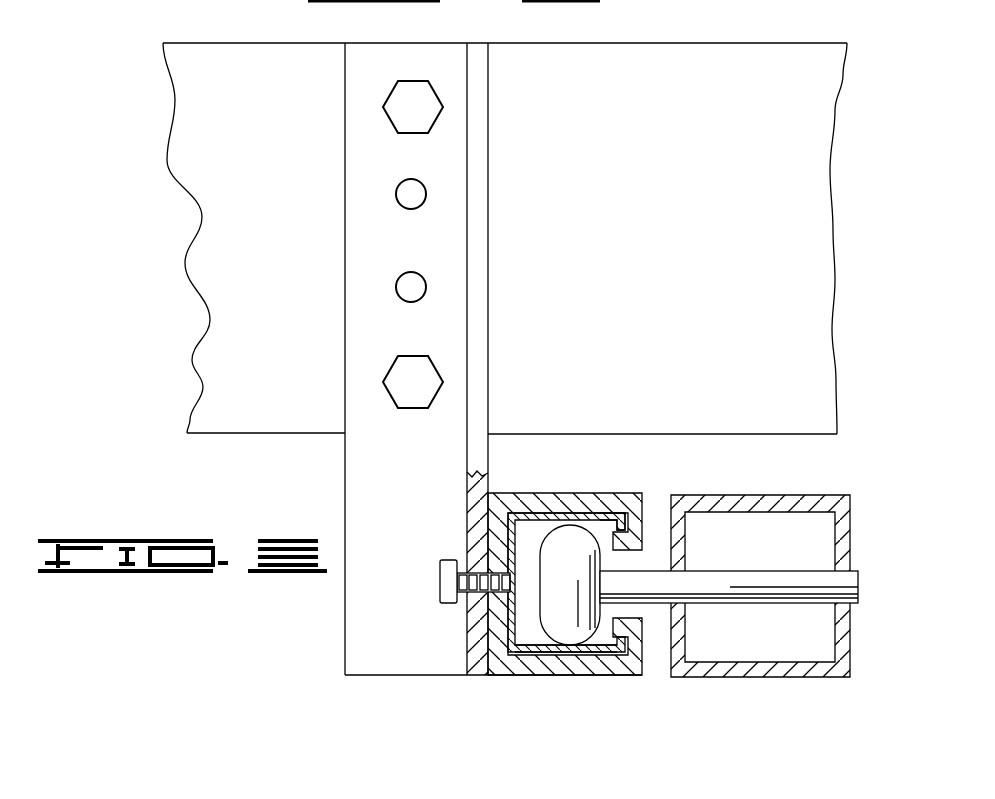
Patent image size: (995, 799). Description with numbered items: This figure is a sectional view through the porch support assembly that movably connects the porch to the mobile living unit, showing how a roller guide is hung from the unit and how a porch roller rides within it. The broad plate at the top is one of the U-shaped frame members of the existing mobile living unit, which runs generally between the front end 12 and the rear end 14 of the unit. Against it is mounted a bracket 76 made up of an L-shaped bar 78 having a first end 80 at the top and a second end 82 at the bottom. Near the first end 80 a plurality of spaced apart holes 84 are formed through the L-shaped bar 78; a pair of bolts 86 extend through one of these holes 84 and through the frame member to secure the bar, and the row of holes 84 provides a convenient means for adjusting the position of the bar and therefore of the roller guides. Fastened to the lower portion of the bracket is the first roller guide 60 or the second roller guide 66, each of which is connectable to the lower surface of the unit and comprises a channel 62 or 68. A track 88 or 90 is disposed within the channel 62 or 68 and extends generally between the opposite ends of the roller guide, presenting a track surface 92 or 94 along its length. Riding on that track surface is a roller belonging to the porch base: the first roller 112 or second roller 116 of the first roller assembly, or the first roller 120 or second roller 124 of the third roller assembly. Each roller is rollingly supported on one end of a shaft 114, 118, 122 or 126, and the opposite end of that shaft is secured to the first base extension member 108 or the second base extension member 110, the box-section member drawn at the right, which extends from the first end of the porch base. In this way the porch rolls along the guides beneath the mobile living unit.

The front end 12 is at (667, 217).
The rear end 14 is at (678, 66).
The bracket 76 is at (448, 354).
The L-shaped bar 78 is at (478, 125).
The first end 80 is at (432, 43).
The second end 82 is at (358, 676).
The holes 84 is at (407, 191).
The bolts 86 is at (402, 108).
The first roller guide 60 is at (603, 516).
The second roller guide 66 is at (582, 498).
The channel 62 is at (566, 505).
The channel 68 is at (510, 500).
The track 88 is at (677, 464).
The track 90 is at (603, 524).
The track surface 92 is at (587, 673).
The track surface 94 is at (531, 644).
The first base extension member 108 is at (772, 563).
The second base extension member 110 is at (750, 495).
The first roller 112 is at (322, 585).
The second roller 116 is at (322, 585).
The first roller 120 is at (322, 585).
The second roller 124 is at (565, 593).
The shaft 114 is at (729, 560).
The shaft 118 is at (729, 560).
The shaft 122 is at (729, 560).
The shaft 126 is at (812, 578).